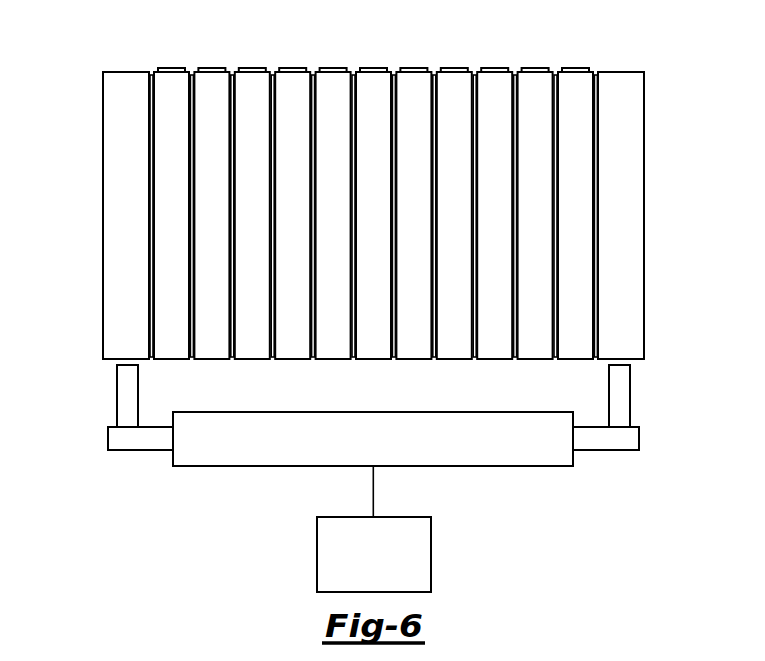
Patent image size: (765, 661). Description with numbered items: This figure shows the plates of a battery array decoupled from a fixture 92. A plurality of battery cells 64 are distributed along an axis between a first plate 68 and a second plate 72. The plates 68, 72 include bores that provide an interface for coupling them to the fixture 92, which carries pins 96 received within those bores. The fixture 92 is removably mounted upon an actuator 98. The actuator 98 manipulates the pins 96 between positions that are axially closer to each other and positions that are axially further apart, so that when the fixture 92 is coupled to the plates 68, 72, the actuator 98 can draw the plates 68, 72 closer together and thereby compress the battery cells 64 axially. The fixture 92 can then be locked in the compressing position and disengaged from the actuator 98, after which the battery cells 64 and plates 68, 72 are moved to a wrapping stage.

The first plate 68 is at (127, 72).
The battery cells 64 is at (197, 72).
The second plate 72 is at (622, 72).
The pins 96 is at (116, 395).
The fixture 92 is at (138, 452).
The actuator 98 is at (365, 582).